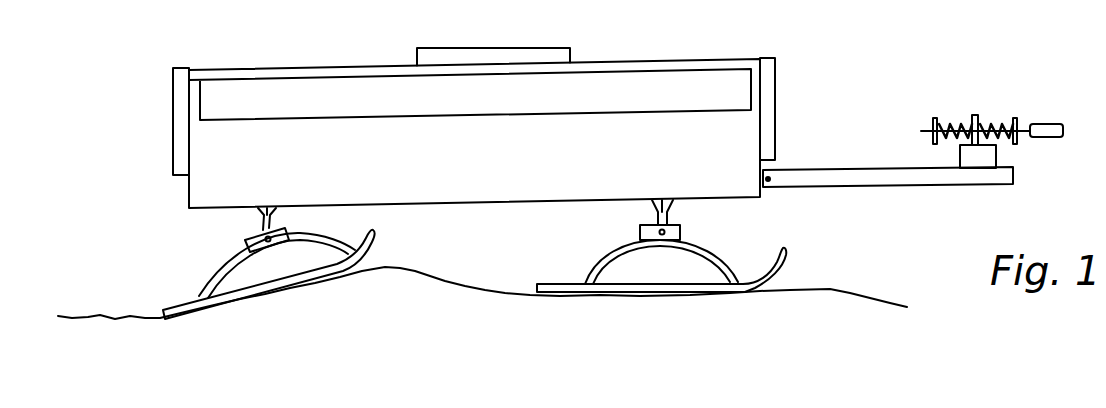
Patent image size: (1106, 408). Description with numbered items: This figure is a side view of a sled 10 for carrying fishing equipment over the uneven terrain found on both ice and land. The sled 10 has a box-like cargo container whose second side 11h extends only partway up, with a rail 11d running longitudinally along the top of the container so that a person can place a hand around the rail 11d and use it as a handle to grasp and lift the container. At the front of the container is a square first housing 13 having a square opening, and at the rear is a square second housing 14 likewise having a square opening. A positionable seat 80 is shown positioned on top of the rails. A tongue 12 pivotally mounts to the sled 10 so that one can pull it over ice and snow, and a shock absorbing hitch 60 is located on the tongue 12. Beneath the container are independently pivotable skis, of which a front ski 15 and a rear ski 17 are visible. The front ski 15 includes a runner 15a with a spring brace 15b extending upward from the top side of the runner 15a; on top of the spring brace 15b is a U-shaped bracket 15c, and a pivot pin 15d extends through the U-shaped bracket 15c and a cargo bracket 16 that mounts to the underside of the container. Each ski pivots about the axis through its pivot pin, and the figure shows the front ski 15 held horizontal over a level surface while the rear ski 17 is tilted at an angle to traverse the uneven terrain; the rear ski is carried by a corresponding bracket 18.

The sled 10 is at (473, 111).
The rail 11d is at (345, 70).
The second side 11h is at (650, 130).
The tongue 12 is at (830, 176).
The first housing 13 is at (770, 95).
The second housing 14 is at (180, 102).
The front ski 15 is at (674, 225).
The runner 15a is at (782, 260).
The spring brace 15b is at (587, 258).
The U-shaped bracket 15c is at (678, 228).
The pivot pin 15d is at (640, 226).
The cargo bracket 16 is at (665, 200).
The rear ski 17 is at (254, 248).
The front strut 18 is at (272, 207).
The shock absorbing hitch 60 is at (1020, 97).
The positionable seat 80 is at (497, 50).